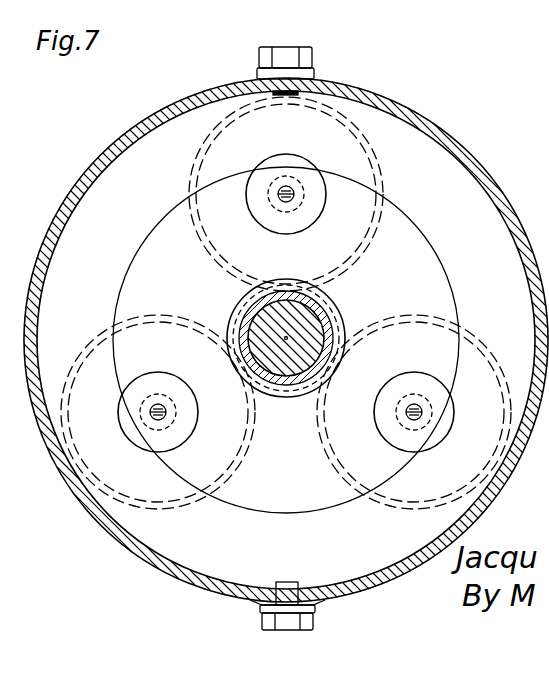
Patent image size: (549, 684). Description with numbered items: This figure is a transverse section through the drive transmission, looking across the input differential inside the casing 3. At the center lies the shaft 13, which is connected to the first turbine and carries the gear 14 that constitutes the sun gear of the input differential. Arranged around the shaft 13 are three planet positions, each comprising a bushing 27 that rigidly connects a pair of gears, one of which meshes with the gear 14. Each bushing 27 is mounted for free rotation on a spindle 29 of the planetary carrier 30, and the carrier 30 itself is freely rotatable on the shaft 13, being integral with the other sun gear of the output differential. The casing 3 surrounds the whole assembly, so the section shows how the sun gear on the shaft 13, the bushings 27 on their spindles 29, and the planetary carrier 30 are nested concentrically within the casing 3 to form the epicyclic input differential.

The casing 3 is at (471, 163).
The shaft 13 is at (345, 316).
The gear 14 is at (237, 312).
The bushing 27 is at (284, 154).
The spindle 29 is at (190, 180).
The planetary carrier 30 is at (117, 283).